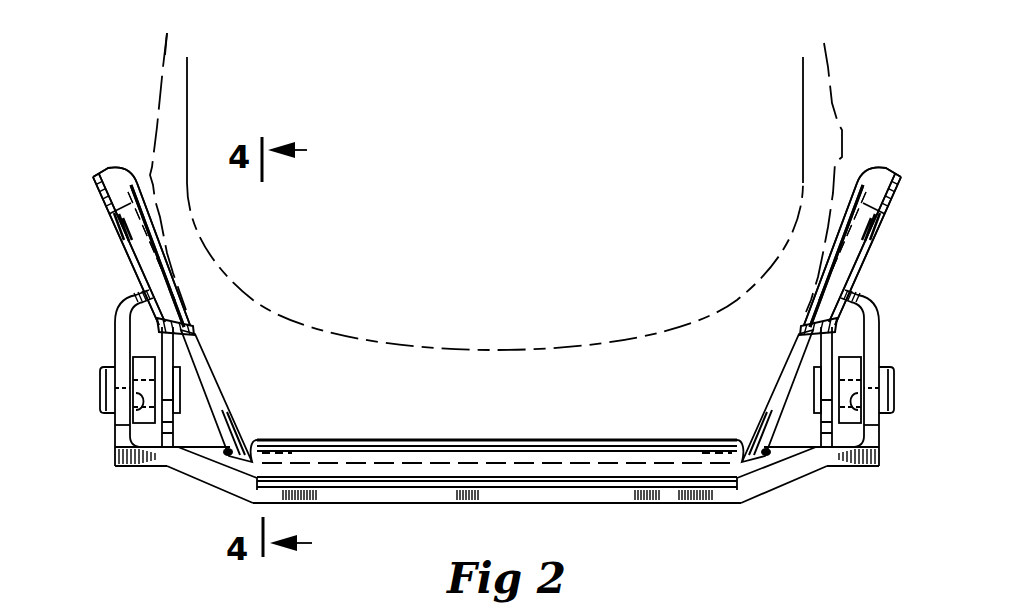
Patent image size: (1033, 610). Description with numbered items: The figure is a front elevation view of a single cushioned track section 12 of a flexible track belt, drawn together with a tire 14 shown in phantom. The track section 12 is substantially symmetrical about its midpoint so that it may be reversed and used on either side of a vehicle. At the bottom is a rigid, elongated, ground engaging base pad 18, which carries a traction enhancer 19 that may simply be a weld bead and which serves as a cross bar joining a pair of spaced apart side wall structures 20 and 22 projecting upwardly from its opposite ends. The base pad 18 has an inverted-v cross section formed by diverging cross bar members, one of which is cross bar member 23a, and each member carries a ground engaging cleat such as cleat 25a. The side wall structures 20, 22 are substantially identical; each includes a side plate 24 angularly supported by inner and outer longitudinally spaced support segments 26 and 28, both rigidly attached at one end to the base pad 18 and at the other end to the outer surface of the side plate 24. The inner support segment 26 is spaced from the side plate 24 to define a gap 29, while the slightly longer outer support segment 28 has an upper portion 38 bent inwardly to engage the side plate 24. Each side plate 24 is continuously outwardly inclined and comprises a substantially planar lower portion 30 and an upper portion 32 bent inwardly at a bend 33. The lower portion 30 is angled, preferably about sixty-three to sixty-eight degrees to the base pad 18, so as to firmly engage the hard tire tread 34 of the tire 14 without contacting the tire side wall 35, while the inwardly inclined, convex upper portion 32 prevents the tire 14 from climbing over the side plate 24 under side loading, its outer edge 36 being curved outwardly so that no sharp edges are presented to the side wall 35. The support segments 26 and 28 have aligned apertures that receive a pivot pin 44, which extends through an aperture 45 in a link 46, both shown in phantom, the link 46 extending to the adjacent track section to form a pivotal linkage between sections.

The track section 12 is at (470, 362).
The tire 14 is at (150, 37).
The base pad 18 is at (628, 528).
The traction enhancer 19 is at (486, 440).
The side wall structure 20 is at (134, 132).
The side wall structure 22 is at (874, 144).
The cross bar member 23a is at (511, 466).
The side plate 24 is at (207, 295).
The ground engaging cleat 25a is at (570, 493).
The inner support segment 26 is at (176, 365).
The outer support segment 28 is at (113, 327).
The gap 29 is at (192, 420).
The lower portion 30 is at (233, 410).
The upper portion 32 is at (107, 167).
The bend 33 is at (187, 327).
The tire tread 34 is at (435, 465).
The side wall 35 is at (163, 70).
The outer edge 36 is at (123, 238).
The upper portion 38 is at (135, 292).
The pivot pin 44 is at (100, 392).
The aperture 45 is at (110, 428).
The link 46 is at (140, 357).